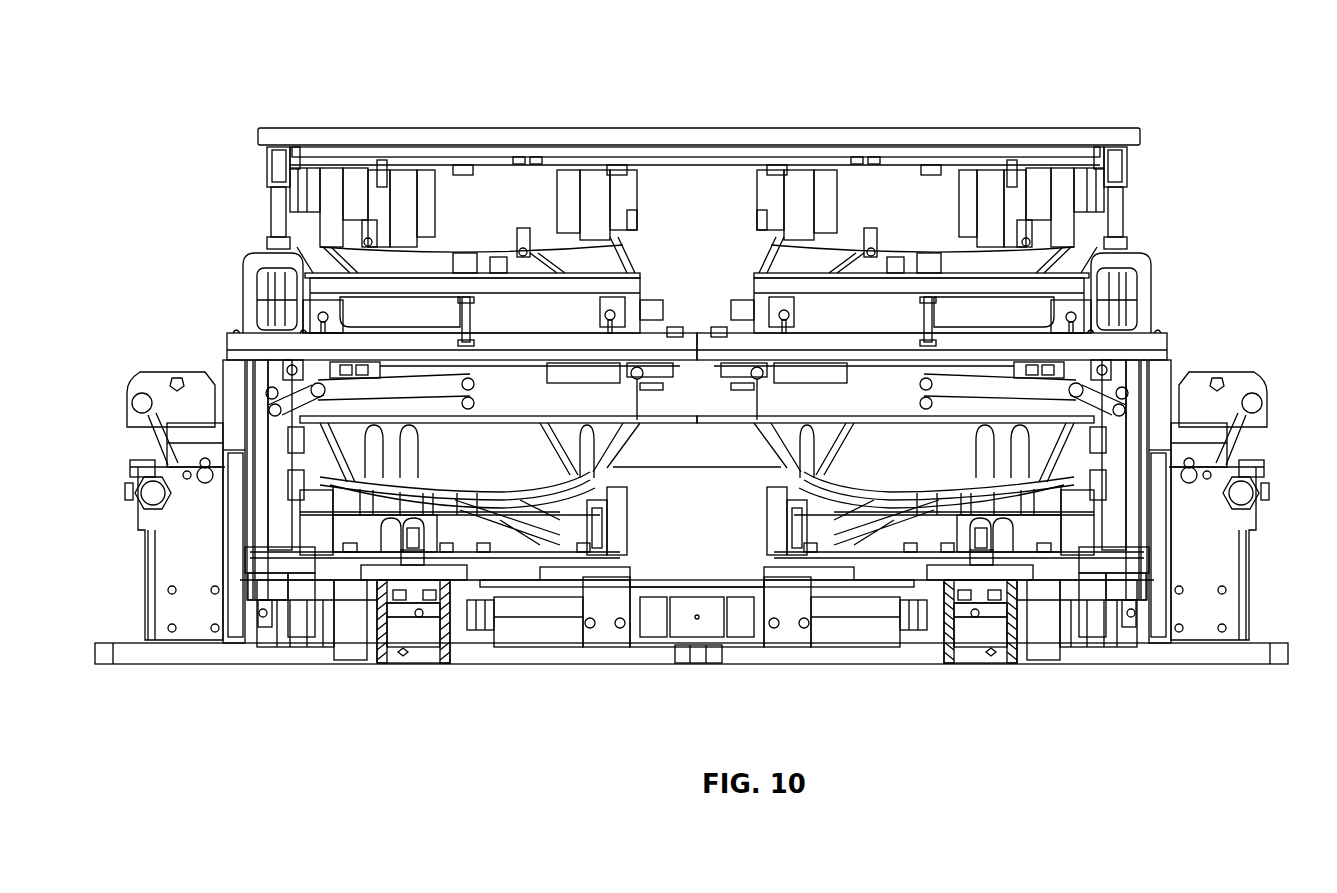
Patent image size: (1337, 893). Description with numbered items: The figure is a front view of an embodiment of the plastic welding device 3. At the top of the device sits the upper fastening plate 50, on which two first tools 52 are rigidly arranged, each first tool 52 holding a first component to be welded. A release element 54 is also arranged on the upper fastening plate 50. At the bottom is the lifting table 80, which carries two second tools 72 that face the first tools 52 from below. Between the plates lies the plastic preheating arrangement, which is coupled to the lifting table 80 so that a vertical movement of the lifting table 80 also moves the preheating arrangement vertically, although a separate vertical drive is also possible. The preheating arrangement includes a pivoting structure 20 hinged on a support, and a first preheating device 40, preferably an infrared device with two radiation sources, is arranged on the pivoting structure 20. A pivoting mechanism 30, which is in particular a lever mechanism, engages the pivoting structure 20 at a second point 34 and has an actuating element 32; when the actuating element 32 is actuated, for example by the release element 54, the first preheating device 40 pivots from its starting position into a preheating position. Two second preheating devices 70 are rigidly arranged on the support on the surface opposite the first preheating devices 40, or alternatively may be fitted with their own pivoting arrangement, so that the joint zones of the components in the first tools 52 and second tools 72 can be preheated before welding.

The plastic welding device 3 is at (1272, 151).
The pivoting structure 20 is at (353, 312).
The pivoting mechanism 30 is at (290, 390).
The actuating element 32 is at (270, 287).
The second point 34 is at (457, 315).
The first preheating device 40 is at (460, 262).
The upper fastening plate 50 is at (666, 137).
The first tool 52 is at (437, 183).
The release element 54 is at (270, 160).
The second preheating device 70 is at (448, 467).
The second tool 72 is at (363, 537).
The lifting table 80 is at (1245, 655).